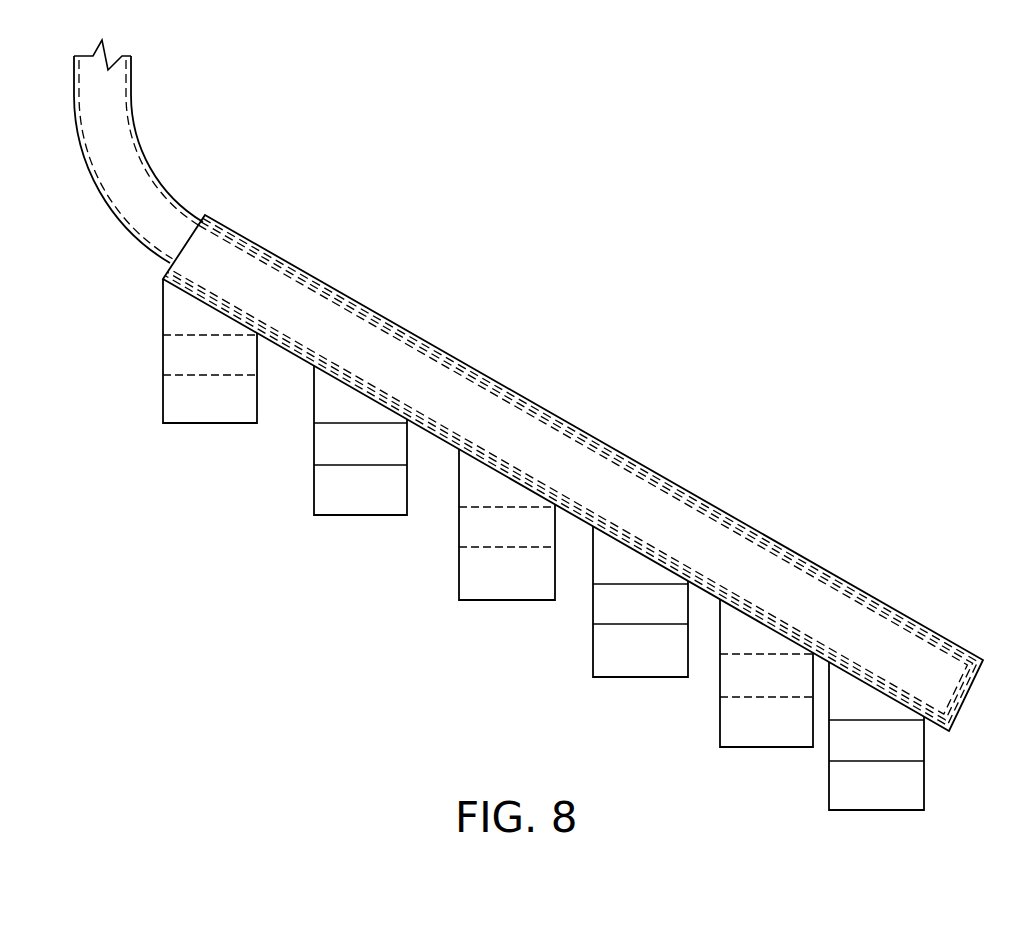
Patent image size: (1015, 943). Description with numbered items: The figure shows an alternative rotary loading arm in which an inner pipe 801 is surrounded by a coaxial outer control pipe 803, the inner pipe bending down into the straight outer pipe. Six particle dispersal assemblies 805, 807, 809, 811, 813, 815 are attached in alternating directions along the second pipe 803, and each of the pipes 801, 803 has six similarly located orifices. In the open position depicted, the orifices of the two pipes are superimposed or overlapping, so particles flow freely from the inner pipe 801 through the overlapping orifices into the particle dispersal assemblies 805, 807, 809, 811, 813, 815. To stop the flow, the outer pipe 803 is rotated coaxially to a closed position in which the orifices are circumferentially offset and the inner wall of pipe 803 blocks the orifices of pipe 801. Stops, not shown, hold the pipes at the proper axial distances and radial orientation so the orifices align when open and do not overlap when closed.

The pipe 801 is at (156, 174).
The second pipe 803 is at (531, 402).
The particle dispersal assembly 805 is at (148, 402).
The particle dispersal assembly 807 is at (300, 497).
The particle dispersal assembly 809 is at (440, 580).
The particle dispersal assembly 811 is at (585, 655).
The particle dispersal assembly 813 is at (710, 731).
The particle dispersal assembly 815 is at (822, 795).